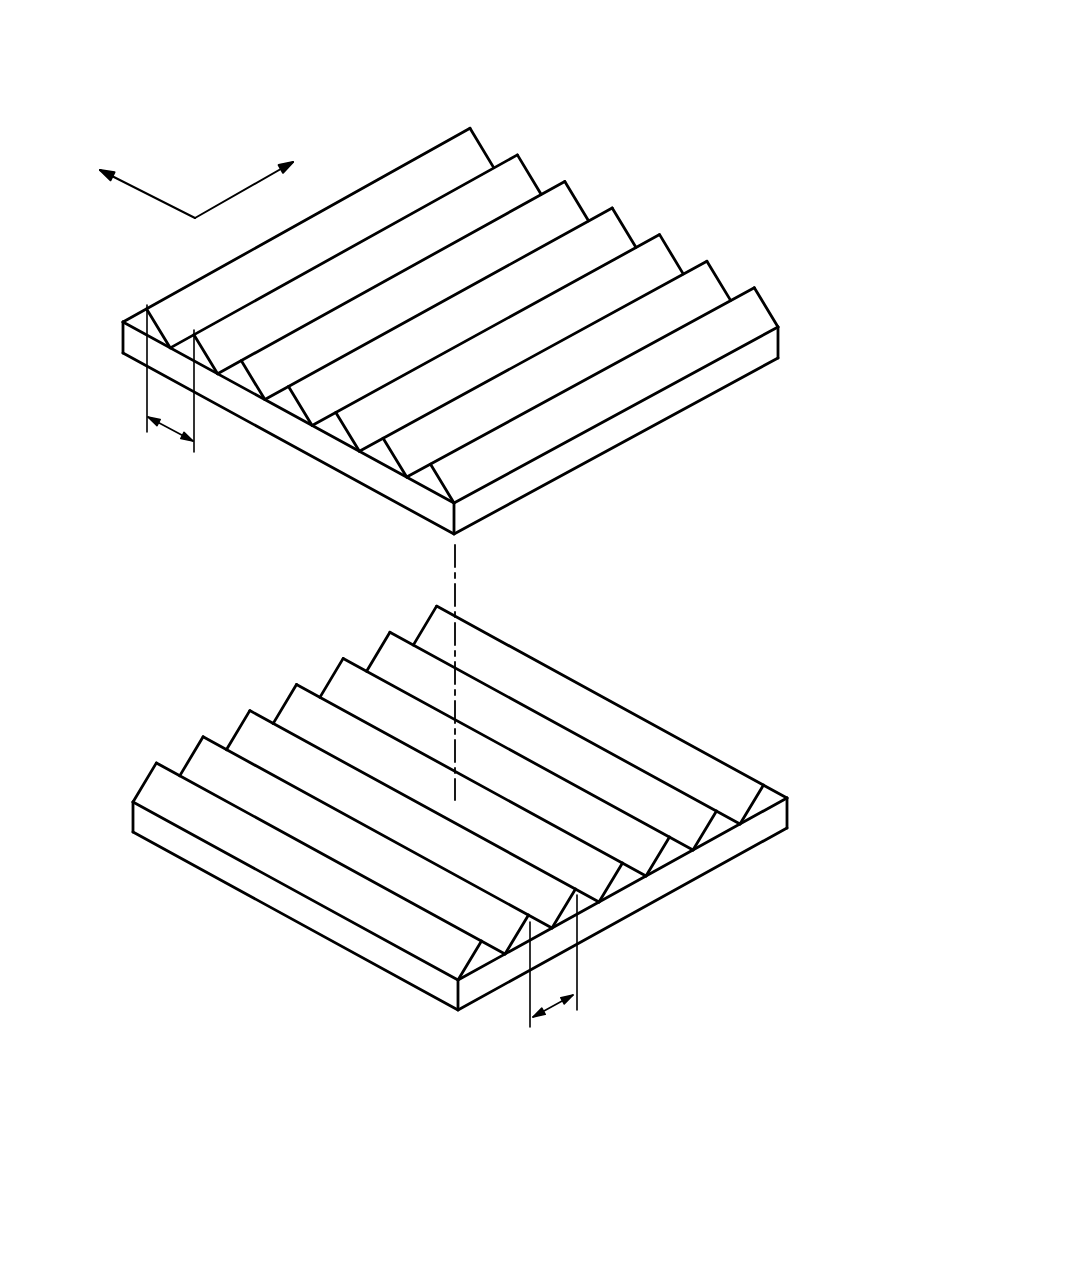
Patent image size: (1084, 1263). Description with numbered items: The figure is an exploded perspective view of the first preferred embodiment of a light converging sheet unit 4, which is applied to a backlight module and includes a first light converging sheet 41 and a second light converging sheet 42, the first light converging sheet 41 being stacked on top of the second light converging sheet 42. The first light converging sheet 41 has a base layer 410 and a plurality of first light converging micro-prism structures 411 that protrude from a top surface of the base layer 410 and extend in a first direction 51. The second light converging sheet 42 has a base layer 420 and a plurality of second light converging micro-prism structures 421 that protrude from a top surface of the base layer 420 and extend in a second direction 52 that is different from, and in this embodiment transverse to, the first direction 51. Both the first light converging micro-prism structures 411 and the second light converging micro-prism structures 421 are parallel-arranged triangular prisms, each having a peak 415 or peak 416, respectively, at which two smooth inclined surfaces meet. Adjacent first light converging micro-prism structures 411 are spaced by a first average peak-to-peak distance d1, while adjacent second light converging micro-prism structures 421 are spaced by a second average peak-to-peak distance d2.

The light converging sheet unit 4 is at (728, 227).
The first light converging sheet 41 is at (718, 412).
The base layer 410 is at (768, 343).
The first light converging micro-prism structures 411 is at (408, 257).
The peak 415 is at (567, 180).
The second light converging sheet 42 is at (725, 743).
The base layer 420 is at (778, 815).
The second light converging micro-prism structures 421 is at (538, 748).
The peak 416 is at (343, 657).
The first direction 51 is at (244, 173).
The second direction 52 is at (147, 173).
The first average peak-to-peak distance d1 is at (170, 378).
The second average peak-to-peak distance d2 is at (553, 961).